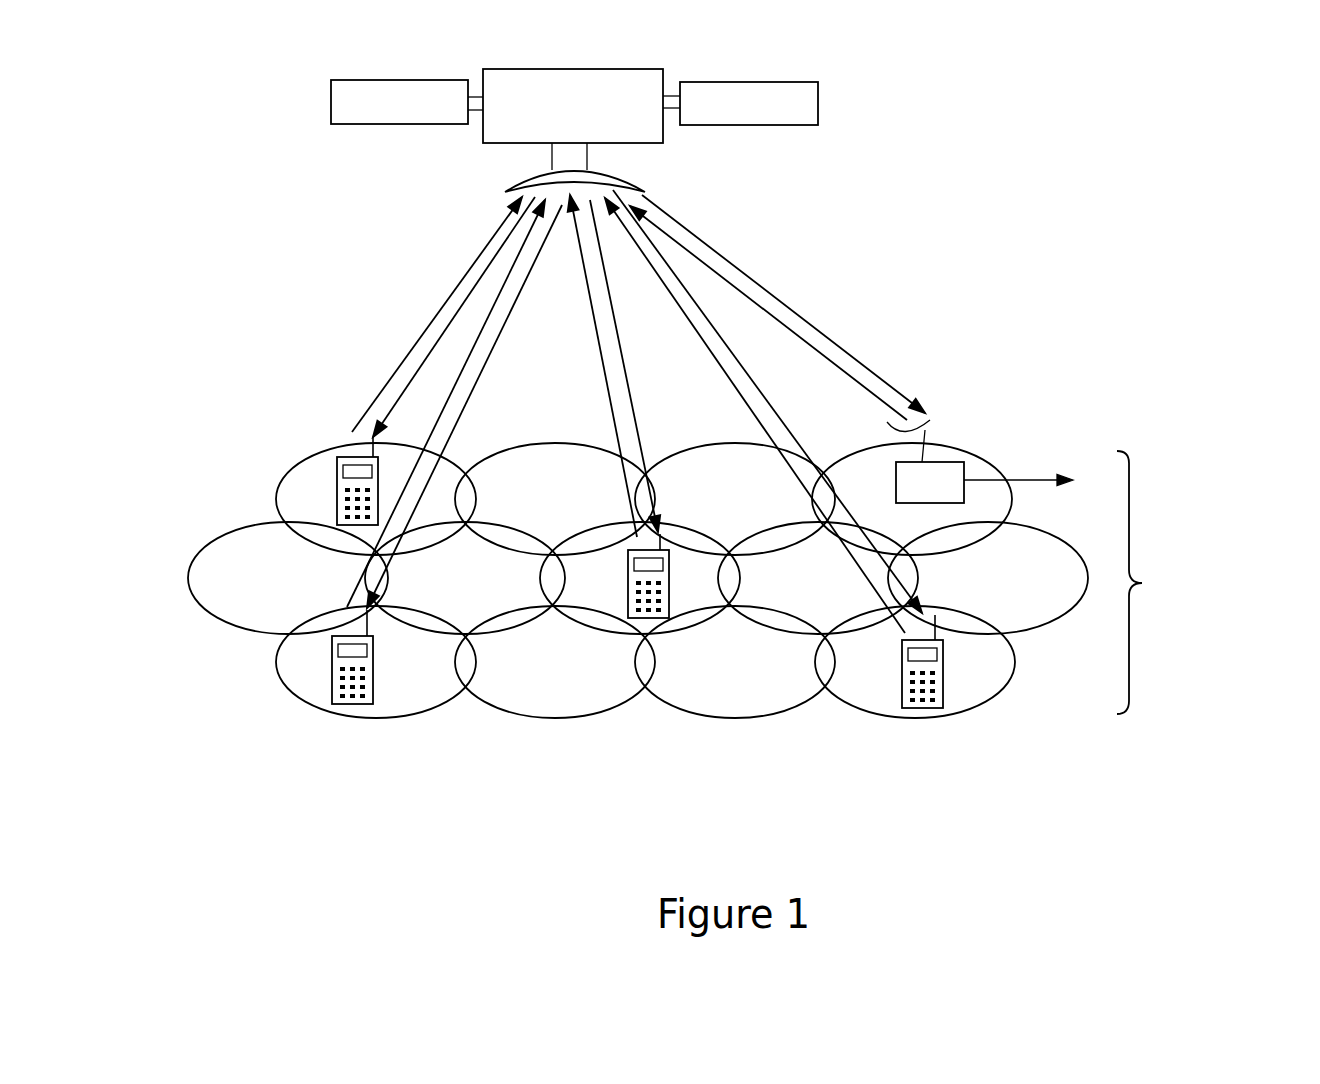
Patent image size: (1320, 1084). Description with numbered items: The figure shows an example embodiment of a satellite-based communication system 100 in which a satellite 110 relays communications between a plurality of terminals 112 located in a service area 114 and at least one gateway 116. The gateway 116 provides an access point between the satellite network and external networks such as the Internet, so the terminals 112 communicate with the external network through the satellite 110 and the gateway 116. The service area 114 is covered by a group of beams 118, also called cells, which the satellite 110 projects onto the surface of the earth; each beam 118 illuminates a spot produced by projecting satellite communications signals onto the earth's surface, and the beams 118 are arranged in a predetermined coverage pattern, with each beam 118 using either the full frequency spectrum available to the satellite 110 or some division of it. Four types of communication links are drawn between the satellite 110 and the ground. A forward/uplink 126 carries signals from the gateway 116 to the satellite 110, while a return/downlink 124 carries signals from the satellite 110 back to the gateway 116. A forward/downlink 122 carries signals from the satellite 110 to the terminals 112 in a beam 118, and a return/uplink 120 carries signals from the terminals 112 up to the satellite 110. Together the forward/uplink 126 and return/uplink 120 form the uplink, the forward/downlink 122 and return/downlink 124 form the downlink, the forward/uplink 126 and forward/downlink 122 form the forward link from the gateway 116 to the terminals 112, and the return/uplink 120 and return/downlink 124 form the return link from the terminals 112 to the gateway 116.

The satellite-based communication system 100 is at (1082, 220).
The satellite 110 is at (592, 134).
The terminals 112 is at (360, 704).
The service area 114 is at (1215, 625).
The gateway 116 is at (925, 430).
The beams 118 is at (283, 662).
The return/uplink 120 is at (647, 267).
The forward/downlink 122 is at (713, 333).
The return/downlink 124 is at (750, 277).
The forward/uplink 126 is at (813, 337).